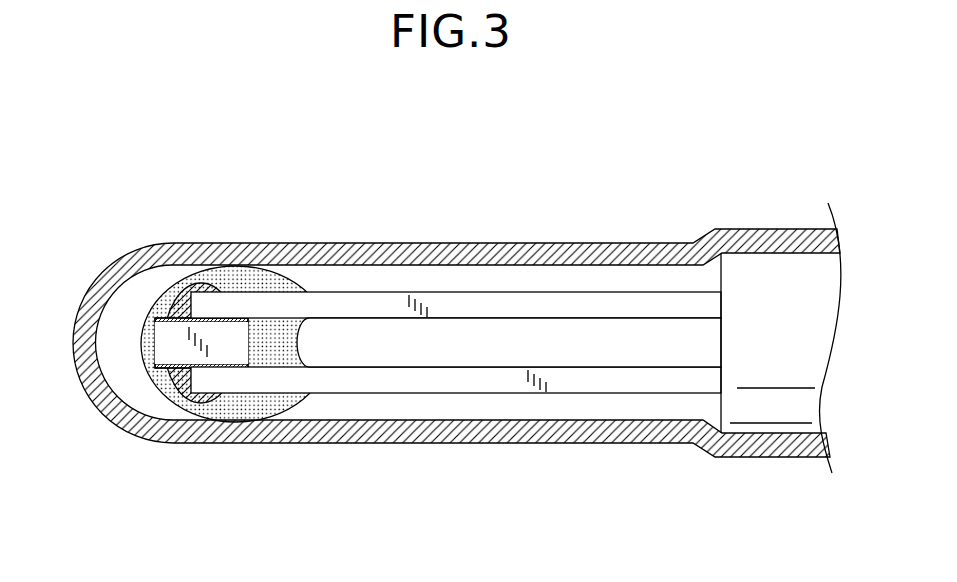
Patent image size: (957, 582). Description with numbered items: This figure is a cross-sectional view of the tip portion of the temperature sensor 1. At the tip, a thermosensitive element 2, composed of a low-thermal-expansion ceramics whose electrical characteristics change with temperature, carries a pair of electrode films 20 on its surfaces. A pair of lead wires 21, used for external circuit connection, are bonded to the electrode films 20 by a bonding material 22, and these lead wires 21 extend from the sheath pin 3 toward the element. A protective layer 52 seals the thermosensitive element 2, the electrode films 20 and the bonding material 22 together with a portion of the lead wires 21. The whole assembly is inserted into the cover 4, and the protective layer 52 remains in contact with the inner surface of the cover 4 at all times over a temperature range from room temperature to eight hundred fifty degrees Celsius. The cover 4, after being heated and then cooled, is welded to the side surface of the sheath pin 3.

The temperature sensor 1 is at (593, 195).
The thermosensitive element 2 is at (167, 338).
The sheath pin 3 is at (757, 398).
The cover 4 is at (110, 412).
The electrode films 20 is at (180, 302).
The lead wires 21 is at (373, 302).
The bonding material 22 is at (178, 383).
The protective layer 52 is at (240, 405).